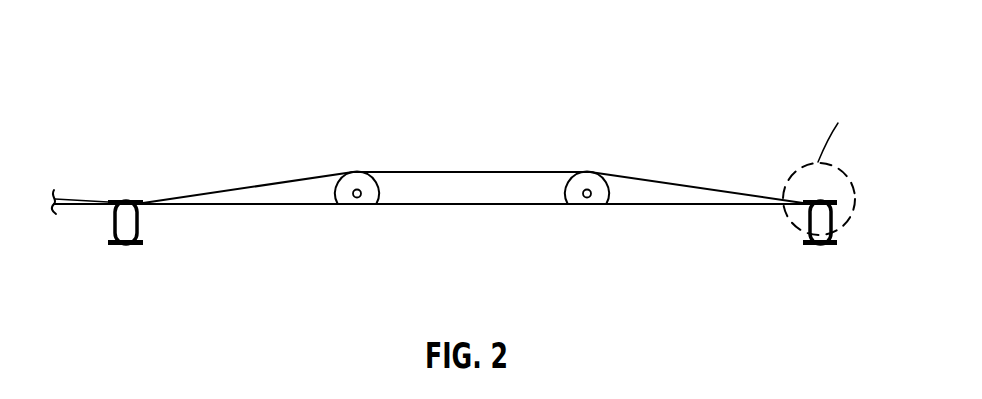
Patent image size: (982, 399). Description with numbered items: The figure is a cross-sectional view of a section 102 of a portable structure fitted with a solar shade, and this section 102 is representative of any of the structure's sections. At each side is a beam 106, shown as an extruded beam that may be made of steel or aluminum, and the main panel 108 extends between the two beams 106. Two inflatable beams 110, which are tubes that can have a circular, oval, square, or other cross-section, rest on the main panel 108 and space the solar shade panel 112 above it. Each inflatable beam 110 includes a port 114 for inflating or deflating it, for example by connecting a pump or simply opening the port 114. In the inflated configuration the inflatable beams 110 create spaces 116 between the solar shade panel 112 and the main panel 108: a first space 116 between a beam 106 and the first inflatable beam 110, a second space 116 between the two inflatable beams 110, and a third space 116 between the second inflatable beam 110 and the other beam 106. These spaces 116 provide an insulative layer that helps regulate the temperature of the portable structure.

The section 102 is at (119, 54).
The beam 106 is at (123, 245).
The main panel 108 is at (452, 204).
The inflatable beam 110 is at (345, 200).
The solar shade panel 112 is at (412, 177).
The port 114 is at (360, 199).
The space 116 is at (257, 195).